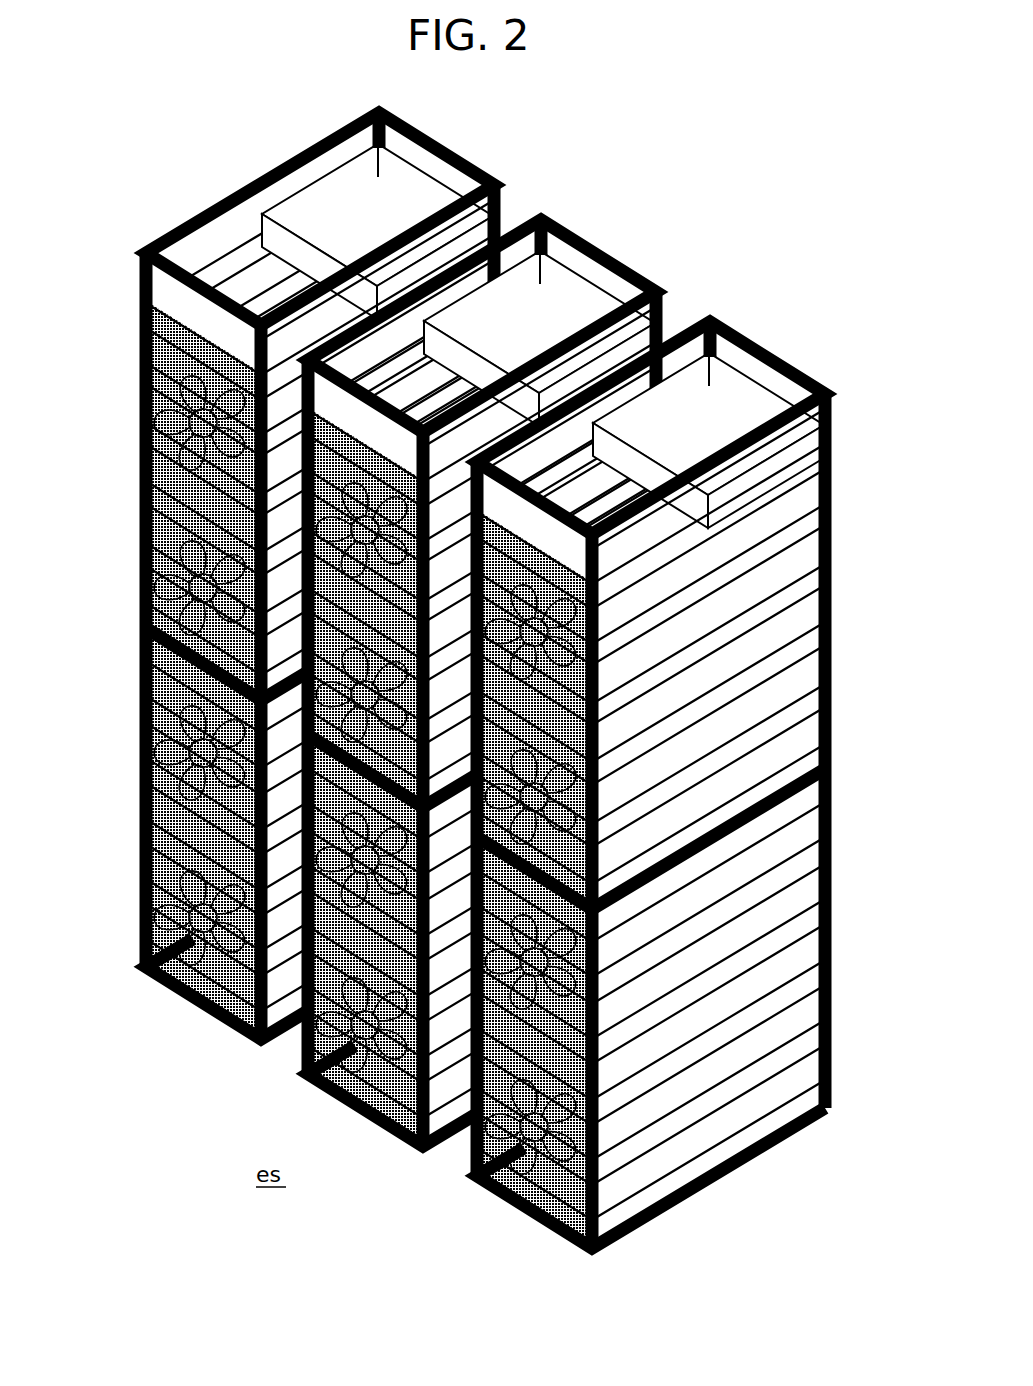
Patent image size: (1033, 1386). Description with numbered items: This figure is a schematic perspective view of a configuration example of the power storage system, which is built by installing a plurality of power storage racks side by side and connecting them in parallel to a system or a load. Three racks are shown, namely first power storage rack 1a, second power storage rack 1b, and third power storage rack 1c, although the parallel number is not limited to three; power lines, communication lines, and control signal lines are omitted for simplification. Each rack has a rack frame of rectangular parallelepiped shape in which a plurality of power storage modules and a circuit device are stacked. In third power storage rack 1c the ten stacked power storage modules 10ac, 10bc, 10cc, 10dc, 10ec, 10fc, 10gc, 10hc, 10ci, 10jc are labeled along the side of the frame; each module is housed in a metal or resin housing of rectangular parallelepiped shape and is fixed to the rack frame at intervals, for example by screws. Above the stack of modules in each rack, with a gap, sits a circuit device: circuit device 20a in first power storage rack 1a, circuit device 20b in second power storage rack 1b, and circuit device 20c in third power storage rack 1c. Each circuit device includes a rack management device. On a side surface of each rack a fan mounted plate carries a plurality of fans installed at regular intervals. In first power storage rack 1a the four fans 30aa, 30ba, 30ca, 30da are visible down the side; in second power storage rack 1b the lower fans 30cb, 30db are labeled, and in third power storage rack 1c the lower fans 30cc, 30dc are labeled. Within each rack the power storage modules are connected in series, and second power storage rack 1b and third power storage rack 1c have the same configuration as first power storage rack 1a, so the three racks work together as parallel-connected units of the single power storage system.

The first power storage rack 1a is at (452, 131).
The second power storage rack 1b is at (612, 226).
The third power storage rack 1c is at (783, 324).
The circuit device 20a is at (416, 231).
The circuit device 20b is at (581, 338).
The circuit device 20c is at (748, 440).
The power storage module 10ac is at (754, 550).
The power storage module 10bc is at (754, 610).
The power storage module 10cc is at (753, 669).
The power storage module 10dc is at (754, 730).
The power storage module 10ec is at (754, 789).
The power storage module 10fc is at (752, 871).
The power storage module 10gc is at (754, 932).
The power storage module 10hc is at (754, 993).
The power storage module 10ci is at (751, 1052).
The power storage module 10jc is at (751, 1112).
The fan 30aa is at (152, 424).
The fan 30ba is at (152, 589).
The fan 30ca is at (152, 754).
The fan 30da is at (152, 919).
The fan 30cb is at (353, 978).
The fan 30db is at (366, 1083).
The fan 30cc is at (523, 1072).
The fan 30dc is at (530, 1183).